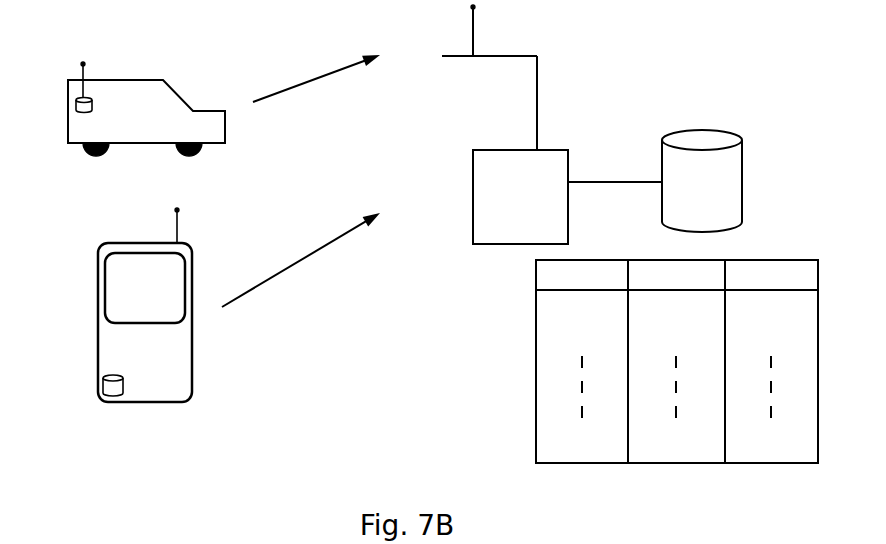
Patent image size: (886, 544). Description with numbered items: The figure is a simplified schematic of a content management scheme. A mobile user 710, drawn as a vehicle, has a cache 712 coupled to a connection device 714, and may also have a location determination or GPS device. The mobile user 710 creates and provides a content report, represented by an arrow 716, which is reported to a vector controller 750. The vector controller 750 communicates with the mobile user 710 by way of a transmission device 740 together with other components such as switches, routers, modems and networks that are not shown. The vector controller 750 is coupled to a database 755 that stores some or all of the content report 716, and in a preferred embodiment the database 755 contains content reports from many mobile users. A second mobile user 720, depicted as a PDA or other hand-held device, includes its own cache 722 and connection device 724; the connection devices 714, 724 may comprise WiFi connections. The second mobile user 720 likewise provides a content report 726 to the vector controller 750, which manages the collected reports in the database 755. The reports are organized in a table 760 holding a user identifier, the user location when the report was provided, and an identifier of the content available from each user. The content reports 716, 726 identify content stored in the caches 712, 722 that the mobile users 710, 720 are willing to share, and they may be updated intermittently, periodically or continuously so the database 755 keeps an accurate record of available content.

The mobile user 710 is at (195, 83).
The cache 712 is at (72, 101).
The connection device 714 is at (85, 73).
The content report 716 is at (308, 82).
The second mobile user 720 is at (194, 375).
The cache 722 is at (105, 386).
The connection device 724 is at (179, 228).
The content report 726 is at (321, 250).
The transmission device 740 is at (473, 33).
The vector controller 750 is at (567, 197).
The database 755 is at (702, 181).
The table 760 is at (818, 320).